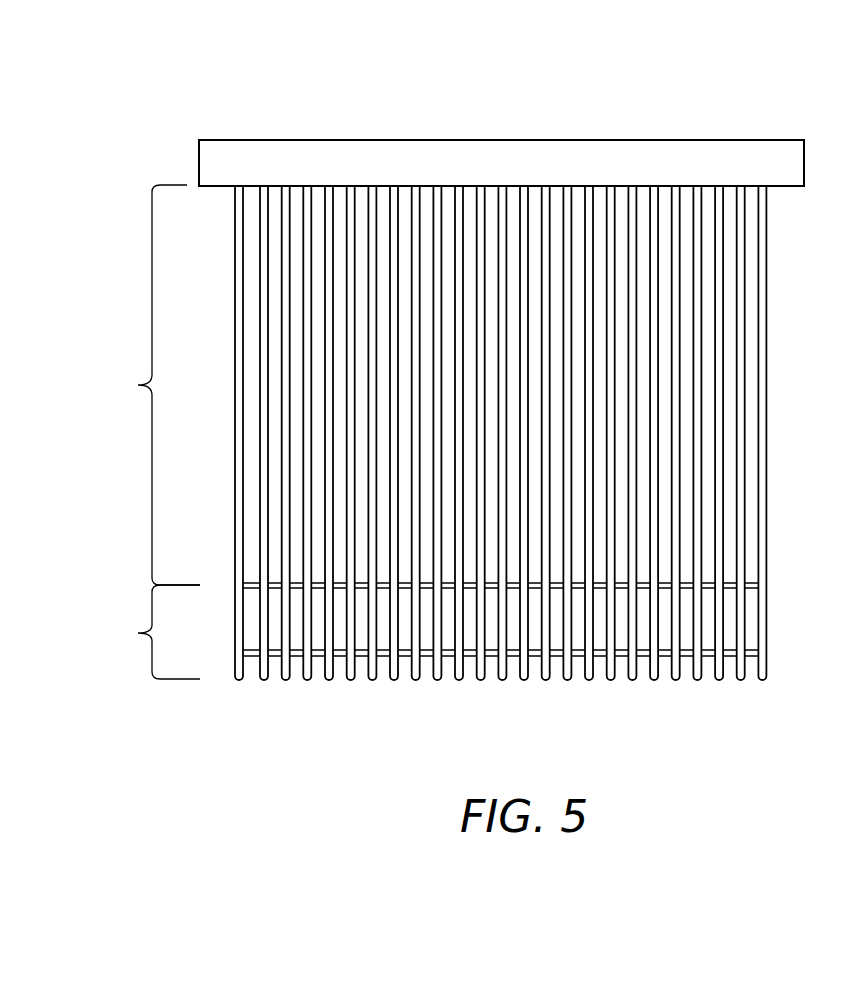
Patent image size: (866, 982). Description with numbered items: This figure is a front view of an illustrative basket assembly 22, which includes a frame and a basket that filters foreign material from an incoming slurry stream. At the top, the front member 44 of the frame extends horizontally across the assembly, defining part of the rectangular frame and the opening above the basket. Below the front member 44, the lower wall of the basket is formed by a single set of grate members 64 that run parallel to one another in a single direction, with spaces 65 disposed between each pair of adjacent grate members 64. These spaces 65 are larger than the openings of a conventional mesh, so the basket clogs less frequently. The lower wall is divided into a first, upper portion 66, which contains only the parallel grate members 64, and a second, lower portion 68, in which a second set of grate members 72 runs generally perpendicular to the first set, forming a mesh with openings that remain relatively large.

The basket assembly 22 is at (531, 95).
The front member 44 is at (677, 150).
The grate members 64 is at (743, 507).
The spaces 65 is at (750, 627).
The first portion 66 is at (150, 385).
The second portion 68 is at (150, 632).
The second grate members 72 is at (298, 587).